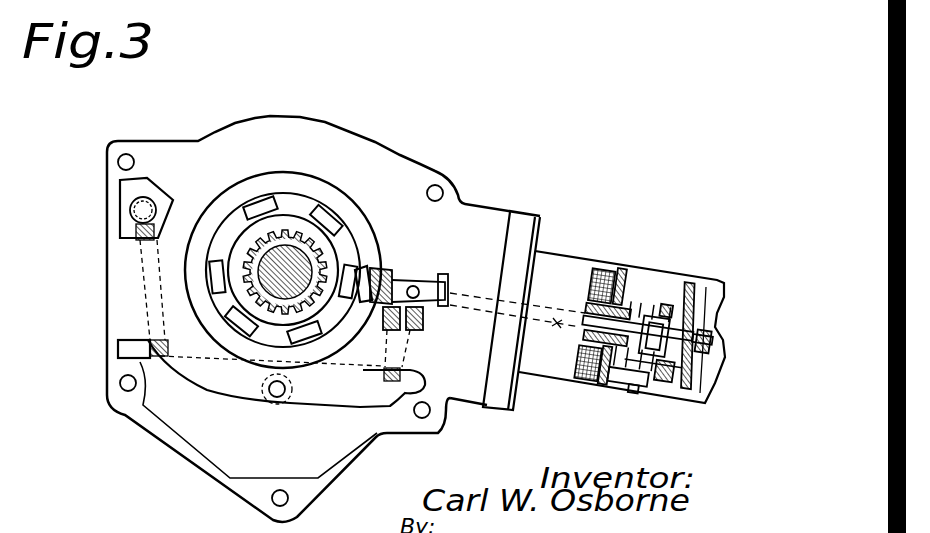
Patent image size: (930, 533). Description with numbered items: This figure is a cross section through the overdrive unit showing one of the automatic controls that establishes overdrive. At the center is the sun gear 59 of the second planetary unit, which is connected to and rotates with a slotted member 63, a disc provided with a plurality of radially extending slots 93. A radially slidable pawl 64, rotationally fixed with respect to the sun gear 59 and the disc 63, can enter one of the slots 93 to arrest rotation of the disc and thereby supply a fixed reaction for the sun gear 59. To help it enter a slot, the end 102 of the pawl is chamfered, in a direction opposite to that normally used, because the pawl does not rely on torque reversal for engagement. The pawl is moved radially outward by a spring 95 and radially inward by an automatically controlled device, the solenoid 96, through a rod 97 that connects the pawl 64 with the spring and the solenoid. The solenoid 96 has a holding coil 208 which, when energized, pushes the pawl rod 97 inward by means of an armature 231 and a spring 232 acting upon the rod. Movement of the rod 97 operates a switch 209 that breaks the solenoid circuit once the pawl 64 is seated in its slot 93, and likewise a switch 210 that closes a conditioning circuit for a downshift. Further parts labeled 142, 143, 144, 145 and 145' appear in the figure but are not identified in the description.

The sun gear 59 is at (284, 228).
The pivot bolt 145 is at (116, 259).
The slotted member 63 is at (214, 312).
The clamp bolt 144 is at (148, 345).
The slots 93 is at (372, 276).
The pawl 64 is at (400, 276).
The lock nut 143 is at (440, 308).
The end of the pawl 102 is at (388, 330).
The lever arm 145' is at (286, 388).
The bolt 142 is at (398, 382).
The solenoid 96 is at (605, 268).
The spring 95 is at (656, 300).
The switch 210 is at (706, 282).
The holding coil 208 is at (597, 302).
The rod 97 is at (558, 326).
The armature 231 is at (580, 345).
The switch 209 is at (648, 392).
The spring 232 is at (668, 380).